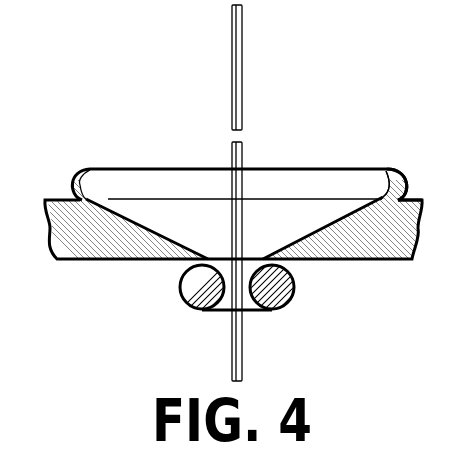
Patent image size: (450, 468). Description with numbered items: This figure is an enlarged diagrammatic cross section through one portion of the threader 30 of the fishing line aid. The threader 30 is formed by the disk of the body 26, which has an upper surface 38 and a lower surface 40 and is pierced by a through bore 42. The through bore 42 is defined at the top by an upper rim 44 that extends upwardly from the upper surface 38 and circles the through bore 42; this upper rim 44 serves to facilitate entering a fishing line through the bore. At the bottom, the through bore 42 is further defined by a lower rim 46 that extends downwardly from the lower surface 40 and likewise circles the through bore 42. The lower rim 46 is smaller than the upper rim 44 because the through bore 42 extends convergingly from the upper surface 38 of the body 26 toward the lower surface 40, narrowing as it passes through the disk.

The body 26 is at (62, 200).
The threader 30 is at (130, 168).
The upper surface 38 is at (417, 200).
The lower surface 40 is at (338, 262).
The through bore 42 is at (173, 184).
The upper rim 44 is at (385, 170).
The lower rim 46 is at (180, 285).